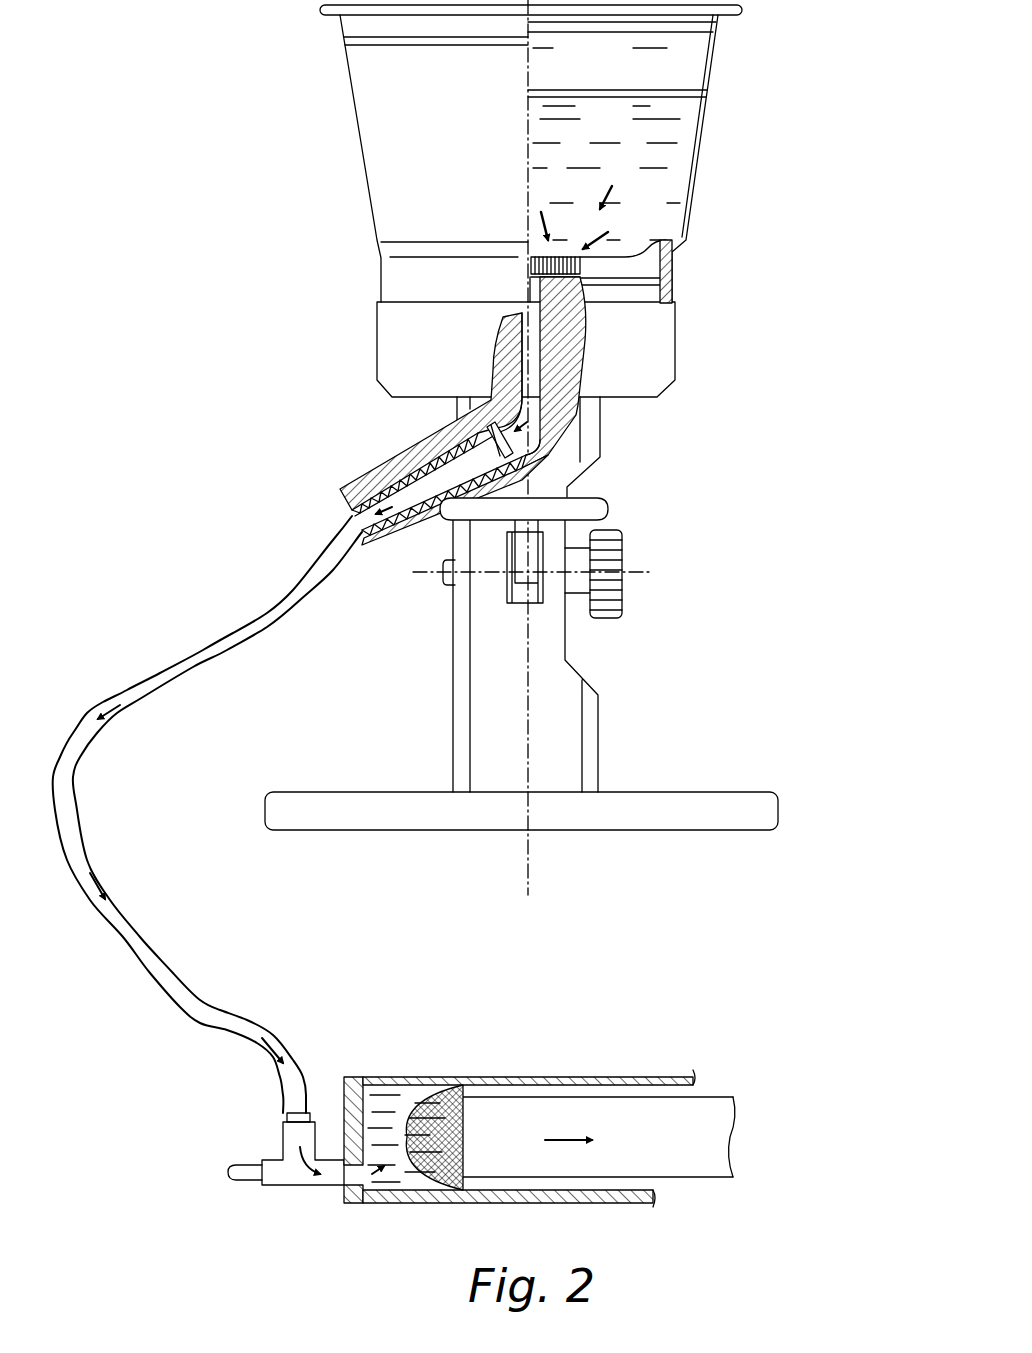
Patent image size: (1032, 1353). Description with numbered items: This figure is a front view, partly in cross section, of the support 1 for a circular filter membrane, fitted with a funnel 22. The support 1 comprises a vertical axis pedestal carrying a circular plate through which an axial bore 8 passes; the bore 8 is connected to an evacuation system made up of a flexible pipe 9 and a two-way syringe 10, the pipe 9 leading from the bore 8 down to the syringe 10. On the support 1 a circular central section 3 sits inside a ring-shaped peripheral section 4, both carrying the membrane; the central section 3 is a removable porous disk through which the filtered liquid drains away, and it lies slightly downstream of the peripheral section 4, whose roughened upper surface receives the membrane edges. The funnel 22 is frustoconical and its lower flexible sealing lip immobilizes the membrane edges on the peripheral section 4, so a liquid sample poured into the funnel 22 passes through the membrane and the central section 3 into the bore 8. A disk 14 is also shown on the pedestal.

The support 1 is at (336, 379).
The circular central section 3 is at (530, 266).
The ring-shaped peripheral section 4 is at (656, 264).
The axial bore 8 is at (531, 396).
The flexible pipe 9 is at (200, 655).
The two-way syringe 10 is at (524, 1110).
The disk 14 is at (532, 530).
The funnel 22 is at (703, 118).